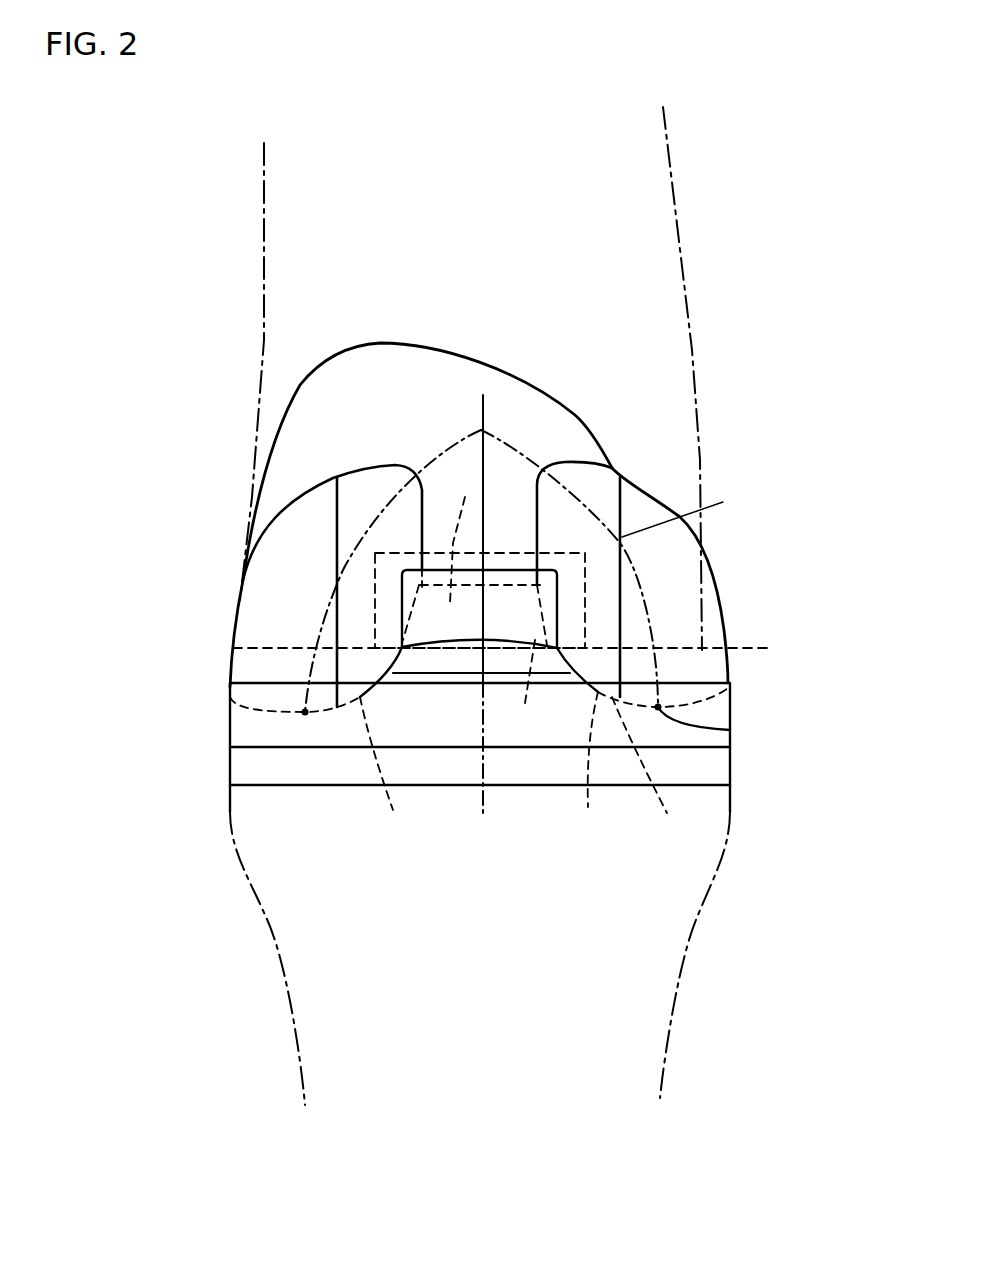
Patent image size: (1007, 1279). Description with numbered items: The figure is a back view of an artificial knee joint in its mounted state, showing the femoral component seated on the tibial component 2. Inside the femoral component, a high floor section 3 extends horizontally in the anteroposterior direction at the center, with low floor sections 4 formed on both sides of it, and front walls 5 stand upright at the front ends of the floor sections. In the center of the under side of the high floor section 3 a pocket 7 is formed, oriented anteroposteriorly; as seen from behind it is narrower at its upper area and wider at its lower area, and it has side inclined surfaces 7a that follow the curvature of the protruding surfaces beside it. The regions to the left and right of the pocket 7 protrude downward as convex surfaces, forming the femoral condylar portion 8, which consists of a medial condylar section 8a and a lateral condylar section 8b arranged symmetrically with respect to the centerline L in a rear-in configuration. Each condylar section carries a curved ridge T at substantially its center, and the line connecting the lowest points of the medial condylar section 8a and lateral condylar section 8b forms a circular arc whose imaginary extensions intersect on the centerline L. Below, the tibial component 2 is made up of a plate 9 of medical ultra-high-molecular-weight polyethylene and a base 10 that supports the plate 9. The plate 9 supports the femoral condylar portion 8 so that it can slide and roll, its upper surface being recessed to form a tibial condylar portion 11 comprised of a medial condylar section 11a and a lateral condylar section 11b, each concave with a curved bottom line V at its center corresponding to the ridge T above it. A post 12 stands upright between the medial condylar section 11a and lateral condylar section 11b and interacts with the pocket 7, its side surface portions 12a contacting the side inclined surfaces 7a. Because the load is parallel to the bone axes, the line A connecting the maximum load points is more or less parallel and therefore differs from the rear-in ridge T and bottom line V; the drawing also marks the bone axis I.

The tibial component 2 is at (768, 701).
The high floor section 3 is at (497, 553).
The low floor sections 4 is at (512, 648).
The front walls 5 is at (512, 392).
The pocket 7 is at (495, 652).
The side inclined surfaces 7a is at (543, 608).
The femoral condylar portion 8 is at (710, 575).
The medial condylar section 8a is at (577, 703).
The lateral condylar section 8b is at (320, 725).
The plate 9 is at (722, 739).
The base 10 is at (722, 768).
The tibial condylar portion 11 is at (594, 773).
The medial condylar section 11a is at (660, 776).
The lateral condylar section 11b is at (397, 774).
The post 12 is at (471, 553).
The side surface portions 12a is at (479, 697).
The centerline L is at (482, 447).
The line A is at (686, 507).
The curved ridge T is at (657, 645).
The bone axis I is at (647, 450).
The curved bottom line V is at (737, 728).